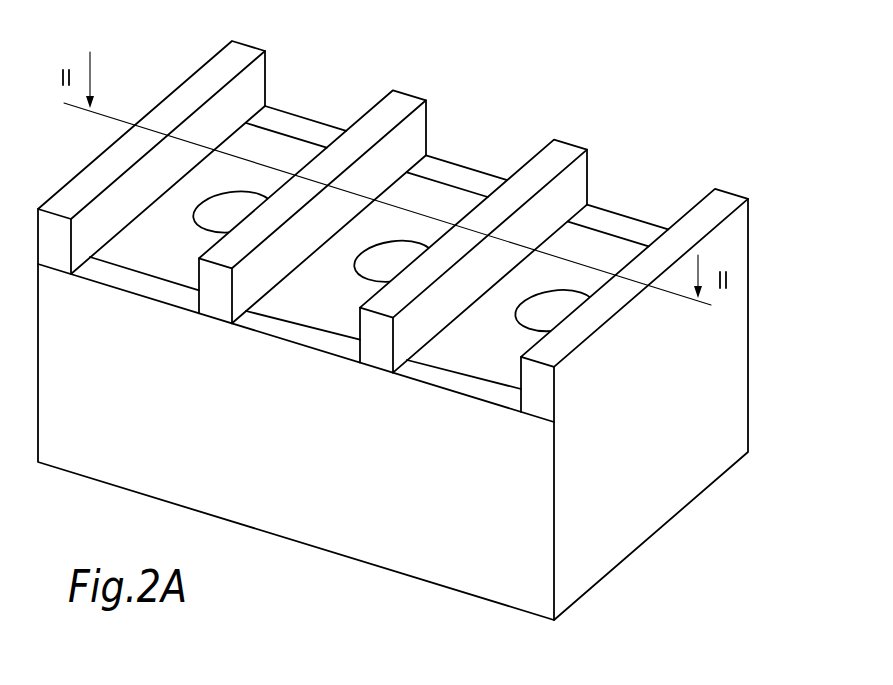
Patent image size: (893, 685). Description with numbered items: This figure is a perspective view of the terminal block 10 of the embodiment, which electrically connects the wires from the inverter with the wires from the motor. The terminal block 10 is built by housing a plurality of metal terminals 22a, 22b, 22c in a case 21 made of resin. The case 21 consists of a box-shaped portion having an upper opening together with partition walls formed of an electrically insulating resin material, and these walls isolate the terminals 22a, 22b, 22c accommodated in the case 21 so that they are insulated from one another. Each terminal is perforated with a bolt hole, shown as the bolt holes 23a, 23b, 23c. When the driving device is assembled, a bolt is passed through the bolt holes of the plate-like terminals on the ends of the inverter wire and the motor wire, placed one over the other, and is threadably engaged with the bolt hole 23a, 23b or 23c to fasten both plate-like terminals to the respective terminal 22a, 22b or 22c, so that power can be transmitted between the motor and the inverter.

The terminal block 10 is at (716, 151).
The case 21 is at (662, 528).
The terminal 22a is at (295, 152).
The terminal 22b is at (448, 203).
The terminal 22c is at (622, 252).
The bolt hole 23a is at (208, 229).
The bolt hole 23b is at (369, 278).
The bolt hole 23c is at (530, 327).